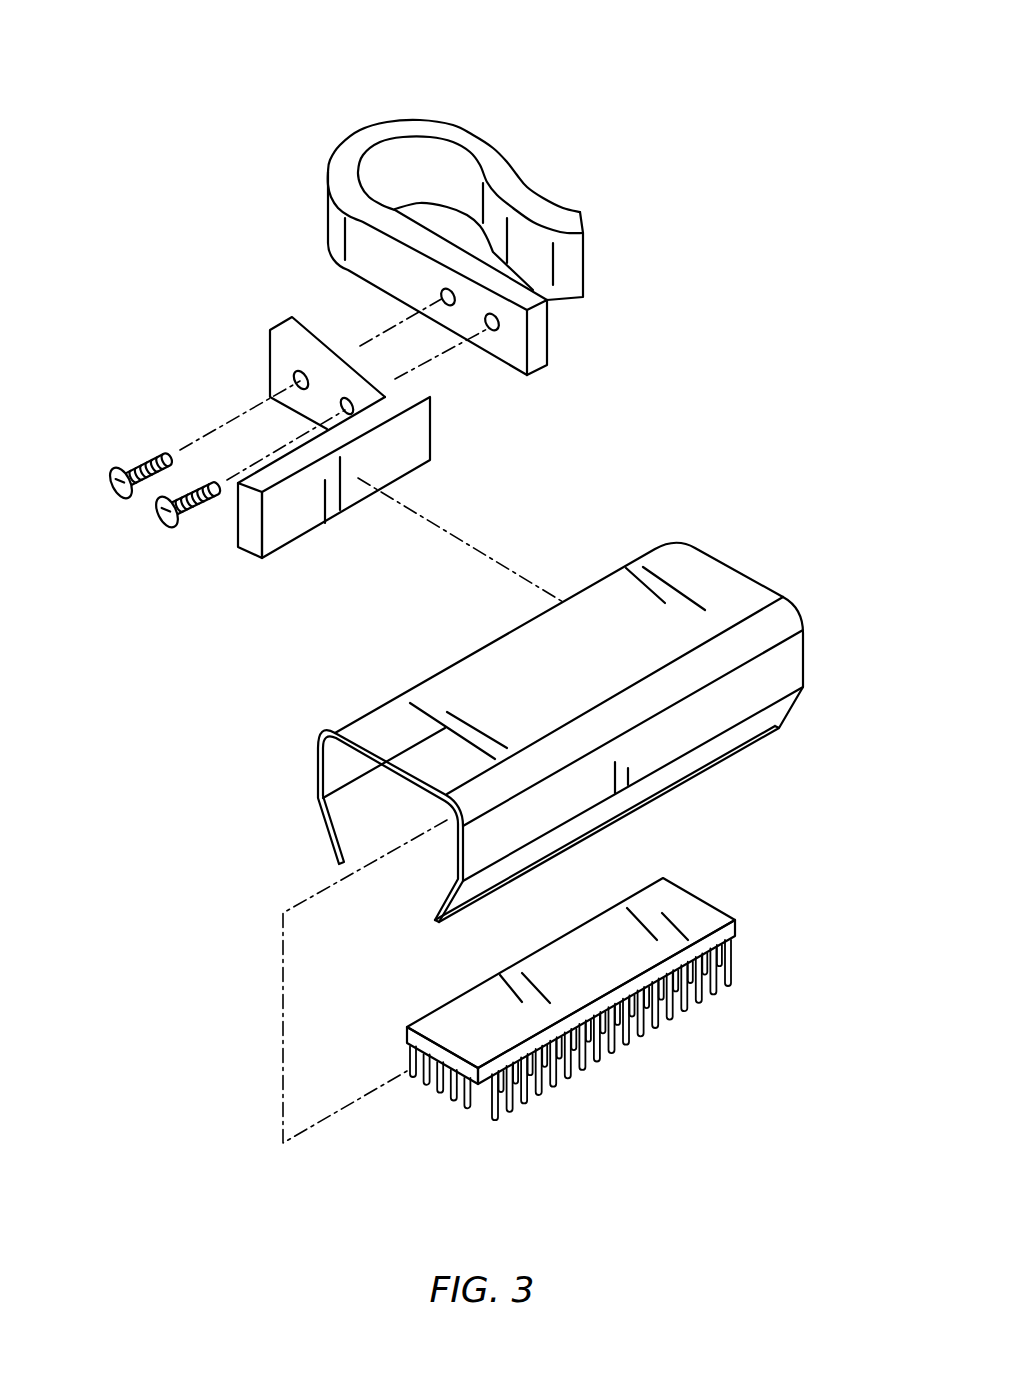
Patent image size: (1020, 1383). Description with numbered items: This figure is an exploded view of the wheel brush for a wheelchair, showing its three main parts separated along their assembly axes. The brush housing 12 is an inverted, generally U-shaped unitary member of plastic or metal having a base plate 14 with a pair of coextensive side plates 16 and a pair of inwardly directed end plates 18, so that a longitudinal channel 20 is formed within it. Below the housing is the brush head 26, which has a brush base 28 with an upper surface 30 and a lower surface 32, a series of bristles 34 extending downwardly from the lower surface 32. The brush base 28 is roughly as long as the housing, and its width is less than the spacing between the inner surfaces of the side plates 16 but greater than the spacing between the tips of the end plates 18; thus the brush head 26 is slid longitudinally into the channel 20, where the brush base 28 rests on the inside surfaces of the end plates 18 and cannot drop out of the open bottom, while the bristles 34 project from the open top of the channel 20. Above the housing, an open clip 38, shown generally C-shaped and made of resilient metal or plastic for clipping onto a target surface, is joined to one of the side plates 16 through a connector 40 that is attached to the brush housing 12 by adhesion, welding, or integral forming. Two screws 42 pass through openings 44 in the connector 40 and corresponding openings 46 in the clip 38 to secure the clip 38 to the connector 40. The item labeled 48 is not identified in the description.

The brush housing 12 is at (554, 806).
The base plate 14 is at (692, 567).
The side plates 16 is at (787, 670).
The inwardly directed end plates 18 is at (651, 785).
The longitudinal channel 20 is at (378, 891).
The brush head 26 is at (610, 1019).
The brush base 28 is at (597, 970).
The upper surface 30 is at (448, 1038).
The lower surface 32 is at (436, 1058).
The bristles 34 is at (501, 1116).
The clip 38 is at (496, 244).
The connector 40 is at (288, 445).
The screws 42 is at (164, 511).
The openings 44 is at (294, 380).
The openings 46 is at (443, 297).
The clip mounting tab 48 is at (580, 312).